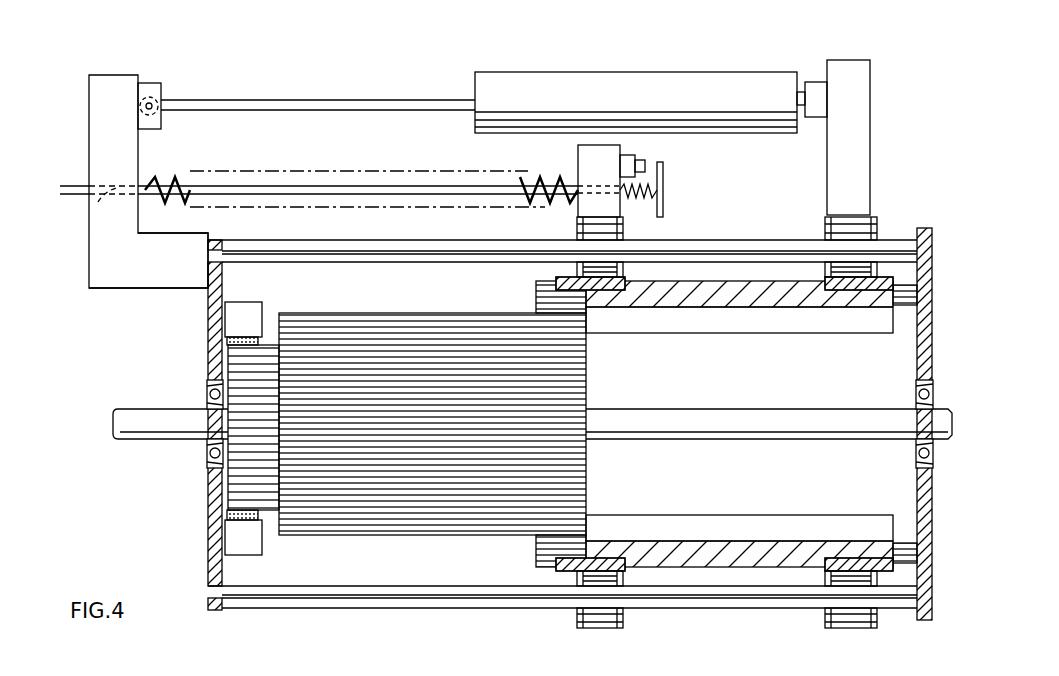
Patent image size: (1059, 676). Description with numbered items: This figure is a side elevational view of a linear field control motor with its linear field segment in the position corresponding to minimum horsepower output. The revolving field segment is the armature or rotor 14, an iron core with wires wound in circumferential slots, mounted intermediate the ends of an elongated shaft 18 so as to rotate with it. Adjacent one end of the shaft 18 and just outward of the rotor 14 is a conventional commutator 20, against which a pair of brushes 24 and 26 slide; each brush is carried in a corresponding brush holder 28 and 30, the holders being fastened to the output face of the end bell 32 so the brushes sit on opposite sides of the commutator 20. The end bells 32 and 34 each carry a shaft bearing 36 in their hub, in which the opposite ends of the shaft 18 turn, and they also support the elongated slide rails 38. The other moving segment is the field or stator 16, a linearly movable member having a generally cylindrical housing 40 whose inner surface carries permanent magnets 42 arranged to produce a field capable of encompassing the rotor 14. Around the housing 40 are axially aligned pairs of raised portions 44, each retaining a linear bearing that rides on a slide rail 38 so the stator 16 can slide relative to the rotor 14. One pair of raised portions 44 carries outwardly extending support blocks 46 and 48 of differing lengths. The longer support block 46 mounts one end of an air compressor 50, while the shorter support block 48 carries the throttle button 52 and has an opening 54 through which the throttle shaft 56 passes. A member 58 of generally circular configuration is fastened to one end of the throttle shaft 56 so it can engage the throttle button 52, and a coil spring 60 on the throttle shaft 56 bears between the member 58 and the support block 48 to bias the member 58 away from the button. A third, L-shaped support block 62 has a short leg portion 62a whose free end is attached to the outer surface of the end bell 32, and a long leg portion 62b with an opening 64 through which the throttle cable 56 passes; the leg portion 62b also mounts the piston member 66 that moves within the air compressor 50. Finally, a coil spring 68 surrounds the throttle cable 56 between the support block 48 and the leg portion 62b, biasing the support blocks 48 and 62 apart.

The armature or rotor 14 is at (382, 308).
The field or stator 16 is at (532, 290).
The shaft 18 is at (150, 441).
The commutator 20 is at (240, 490).
The brush 24 is at (227, 341).
The brush 26 is at (227, 515).
The brush holder 28 is at (258, 331).
The brush holder 30 is at (258, 549).
The end bell 32 is at (208, 302).
The end bell 34 is at (932, 312).
The shaft bearing 36 is at (208, 390).
The slide rail 38 is at (388, 242).
The housing 40 is at (540, 566).
The permanent magnet 42 is at (748, 307).
The raised portion 44 is at (878, 220).
The support block 46 is at (870, 148).
The support block 48 is at (578, 205).
The air compressor 50 is at (628, 103).
The throttle button 52 is at (642, 160).
The opening 54 is at (598, 190).
The throttle shaft 56 is at (70, 186).
The member of generally circular configuration 58 is at (664, 205).
The coil spring 60 is at (648, 198).
The support block 62 is at (108, 74).
The leg portion 62a is at (132, 290).
The leg portion 62b is at (140, 160).
The opening 64 is at (98, 208).
The piston member 66 is at (342, 98).
The coil spring 68 is at (535, 202).